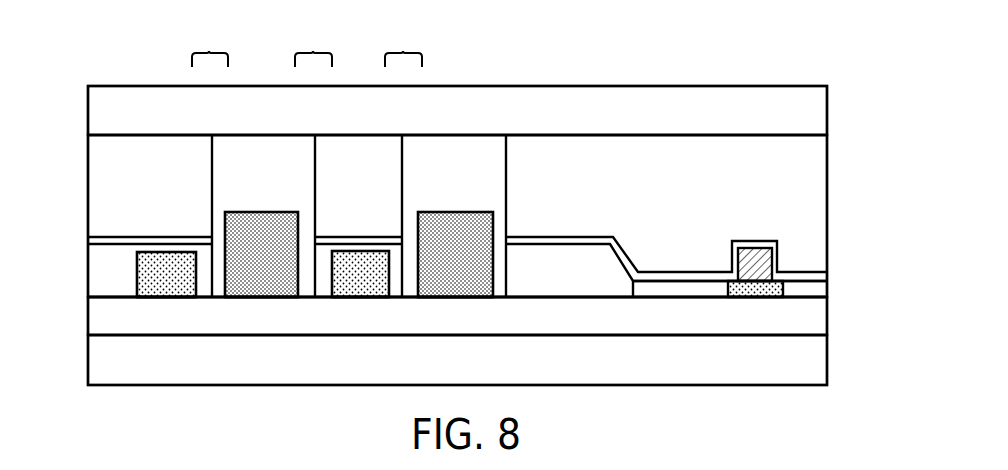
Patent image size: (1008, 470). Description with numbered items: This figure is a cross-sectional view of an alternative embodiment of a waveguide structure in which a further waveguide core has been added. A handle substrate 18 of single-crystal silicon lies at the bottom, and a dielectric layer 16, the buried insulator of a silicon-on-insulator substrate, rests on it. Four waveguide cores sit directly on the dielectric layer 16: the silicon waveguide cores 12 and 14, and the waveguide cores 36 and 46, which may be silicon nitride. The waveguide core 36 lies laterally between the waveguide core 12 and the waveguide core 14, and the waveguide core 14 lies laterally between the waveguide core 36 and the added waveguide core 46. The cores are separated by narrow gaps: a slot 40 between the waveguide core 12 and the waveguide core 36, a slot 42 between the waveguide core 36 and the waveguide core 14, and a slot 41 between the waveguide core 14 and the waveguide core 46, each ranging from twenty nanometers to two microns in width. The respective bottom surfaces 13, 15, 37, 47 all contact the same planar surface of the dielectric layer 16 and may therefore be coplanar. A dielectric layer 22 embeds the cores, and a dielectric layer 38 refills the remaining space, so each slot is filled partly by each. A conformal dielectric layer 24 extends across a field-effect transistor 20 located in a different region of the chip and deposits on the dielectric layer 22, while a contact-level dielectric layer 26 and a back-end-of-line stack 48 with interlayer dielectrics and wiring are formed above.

The waveguide core 12 is at (162, 266).
The bottom surface 13 is at (150, 297).
The waveguide core 14 is at (360, 276).
The bottom surface 15 is at (370, 297).
The dielectric layer 16 is at (158, 327).
The handle substrate 18 is at (158, 368).
The field-effect transistor 20 is at (790, 247).
The dielectric layer 22 is at (116, 282).
The dielectric layer 24 is at (788, 278).
The dielectric layer 26 is at (156, 171).
The waveguide core 36 is at (270, 227).
The bottom surface 37 is at (255, 297).
The dielectric layer 38 is at (268, 166).
The slot 40 is at (209, 53).
The slot 41 is at (403, 53).
The slot 42 is at (313, 53).
The waveguide core 46 is at (465, 227).
The bottom surface 47 is at (467, 297).
The back-end-of-line stack 48 is at (153, 109).